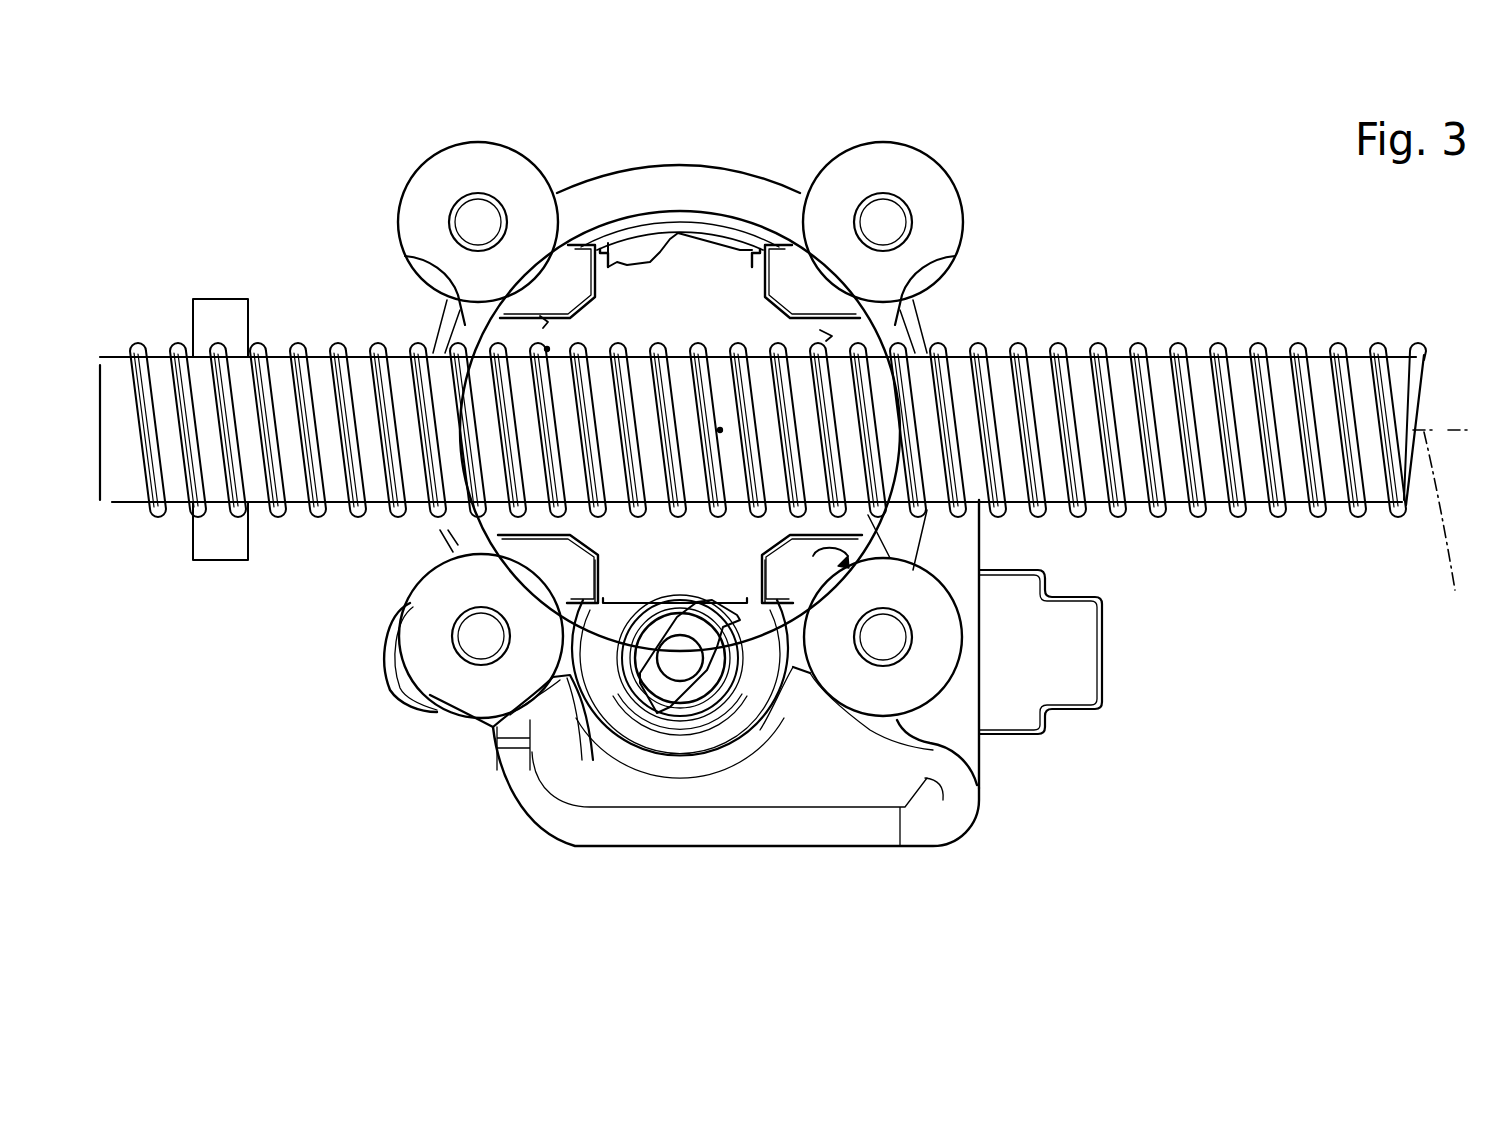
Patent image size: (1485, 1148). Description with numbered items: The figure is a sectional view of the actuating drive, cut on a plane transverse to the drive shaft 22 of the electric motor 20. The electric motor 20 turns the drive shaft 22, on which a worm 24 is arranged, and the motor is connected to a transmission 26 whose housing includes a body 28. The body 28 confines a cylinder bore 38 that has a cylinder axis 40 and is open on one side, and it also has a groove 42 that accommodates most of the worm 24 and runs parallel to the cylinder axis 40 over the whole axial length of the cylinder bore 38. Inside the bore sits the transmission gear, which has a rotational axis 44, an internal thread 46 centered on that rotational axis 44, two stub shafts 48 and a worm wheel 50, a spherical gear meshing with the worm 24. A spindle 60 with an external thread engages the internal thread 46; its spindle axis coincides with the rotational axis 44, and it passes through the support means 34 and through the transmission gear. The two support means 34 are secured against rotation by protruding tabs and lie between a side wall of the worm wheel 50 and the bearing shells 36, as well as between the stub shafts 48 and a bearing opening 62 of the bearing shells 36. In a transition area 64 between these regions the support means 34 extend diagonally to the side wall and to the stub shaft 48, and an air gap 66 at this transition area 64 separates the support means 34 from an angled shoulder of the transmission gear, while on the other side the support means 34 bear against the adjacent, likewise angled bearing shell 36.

The electric motor 20 is at (958, 823).
The drive shaft 22 is at (683, 660).
The worm 24 is at (657, 692).
The transmission 26 is at (401, 146).
The body 28 is at (703, 190).
The support means 34 is at (530, 537).
The bearing shells 36 is at (568, 290).
The cylinder bore 38 is at (848, 575).
The cylinder axis 40 is at (720, 430).
The groove 42 is at (632, 712).
The rotational axis 44 is at (1443, 533).
The internal thread 46 is at (548, 350).
The stub shafts 48 is at (832, 337).
The worm wheel 50 is at (645, 590).
The spindle 60 is at (1253, 473).
The bearing opening 62 is at (545, 322).
The transition area 64 is at (790, 303).
The air gap 66 is at (668, 328).